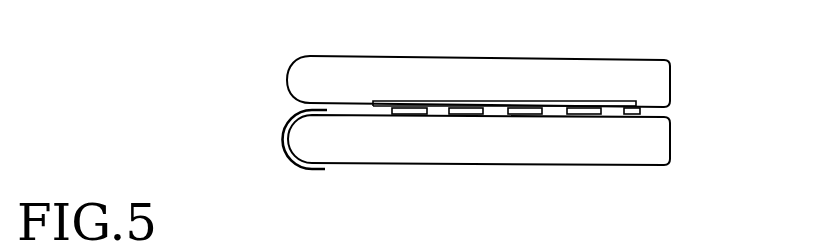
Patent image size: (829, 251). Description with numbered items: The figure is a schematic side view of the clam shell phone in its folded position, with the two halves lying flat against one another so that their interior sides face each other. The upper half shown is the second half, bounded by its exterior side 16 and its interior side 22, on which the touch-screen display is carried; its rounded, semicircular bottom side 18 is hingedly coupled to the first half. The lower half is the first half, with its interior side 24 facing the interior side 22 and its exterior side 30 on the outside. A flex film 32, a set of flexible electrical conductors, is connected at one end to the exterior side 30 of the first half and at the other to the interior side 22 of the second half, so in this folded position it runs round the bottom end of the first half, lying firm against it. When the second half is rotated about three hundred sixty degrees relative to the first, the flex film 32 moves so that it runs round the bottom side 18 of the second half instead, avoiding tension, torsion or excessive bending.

The exterior side 16 is at (630, 59).
The bottom side 18 is at (287, 80).
The interior side 22 is at (643, 115).
The interior side 24 is at (621, 103).
The exterior side 30 is at (638, 165).
The flex film 32 is at (283, 118).